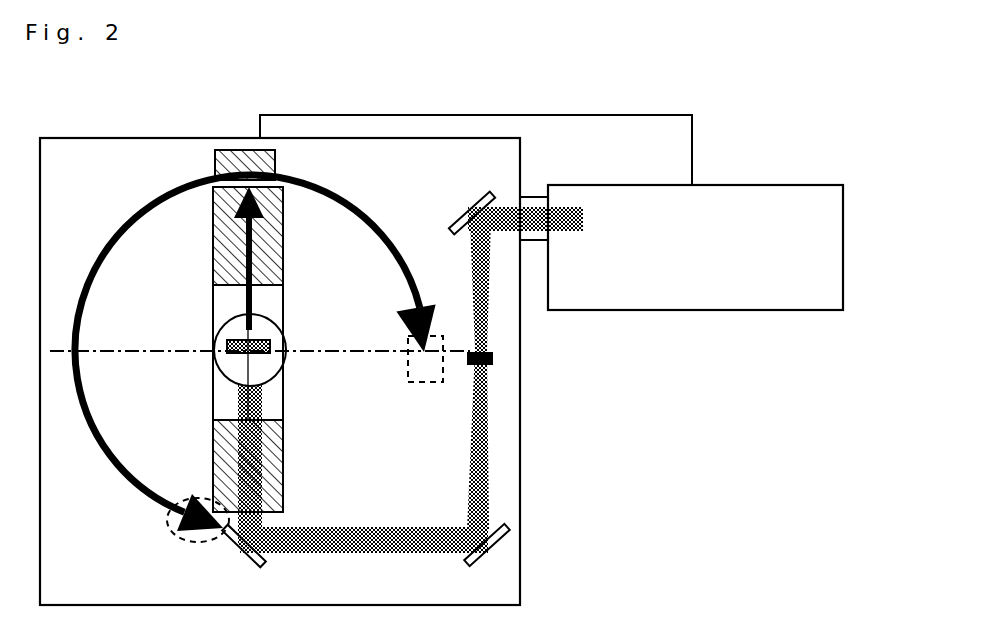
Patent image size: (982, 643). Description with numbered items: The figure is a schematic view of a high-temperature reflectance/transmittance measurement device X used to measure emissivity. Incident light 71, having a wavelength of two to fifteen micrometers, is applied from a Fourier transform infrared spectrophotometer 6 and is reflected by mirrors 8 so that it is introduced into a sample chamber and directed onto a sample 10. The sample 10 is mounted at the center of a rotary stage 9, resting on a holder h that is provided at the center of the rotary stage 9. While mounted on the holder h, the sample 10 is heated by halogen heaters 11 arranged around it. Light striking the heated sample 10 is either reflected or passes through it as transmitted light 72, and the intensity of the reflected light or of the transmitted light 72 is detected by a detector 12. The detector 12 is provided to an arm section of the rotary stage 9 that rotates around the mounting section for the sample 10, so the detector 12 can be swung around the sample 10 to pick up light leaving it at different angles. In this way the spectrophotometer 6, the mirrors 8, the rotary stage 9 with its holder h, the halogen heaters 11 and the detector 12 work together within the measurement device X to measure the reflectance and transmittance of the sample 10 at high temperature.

The Fourier transform infrared spectrophotometer 6 is at (695, 247).
The mirror 8 is at (468, 208).
The rotary stage 9 is at (243, 368).
The sample 10 is at (243, 352).
The halogen heater 11 is at (283, 268).
The detector 12 is at (235, 150).
The incident light 71 is at (500, 502).
The transmitted light 72 is at (232, 299).
The holder h is at (222, 340).
The high-temperature reflectance/transmittance measurement device X is at (701, 94).